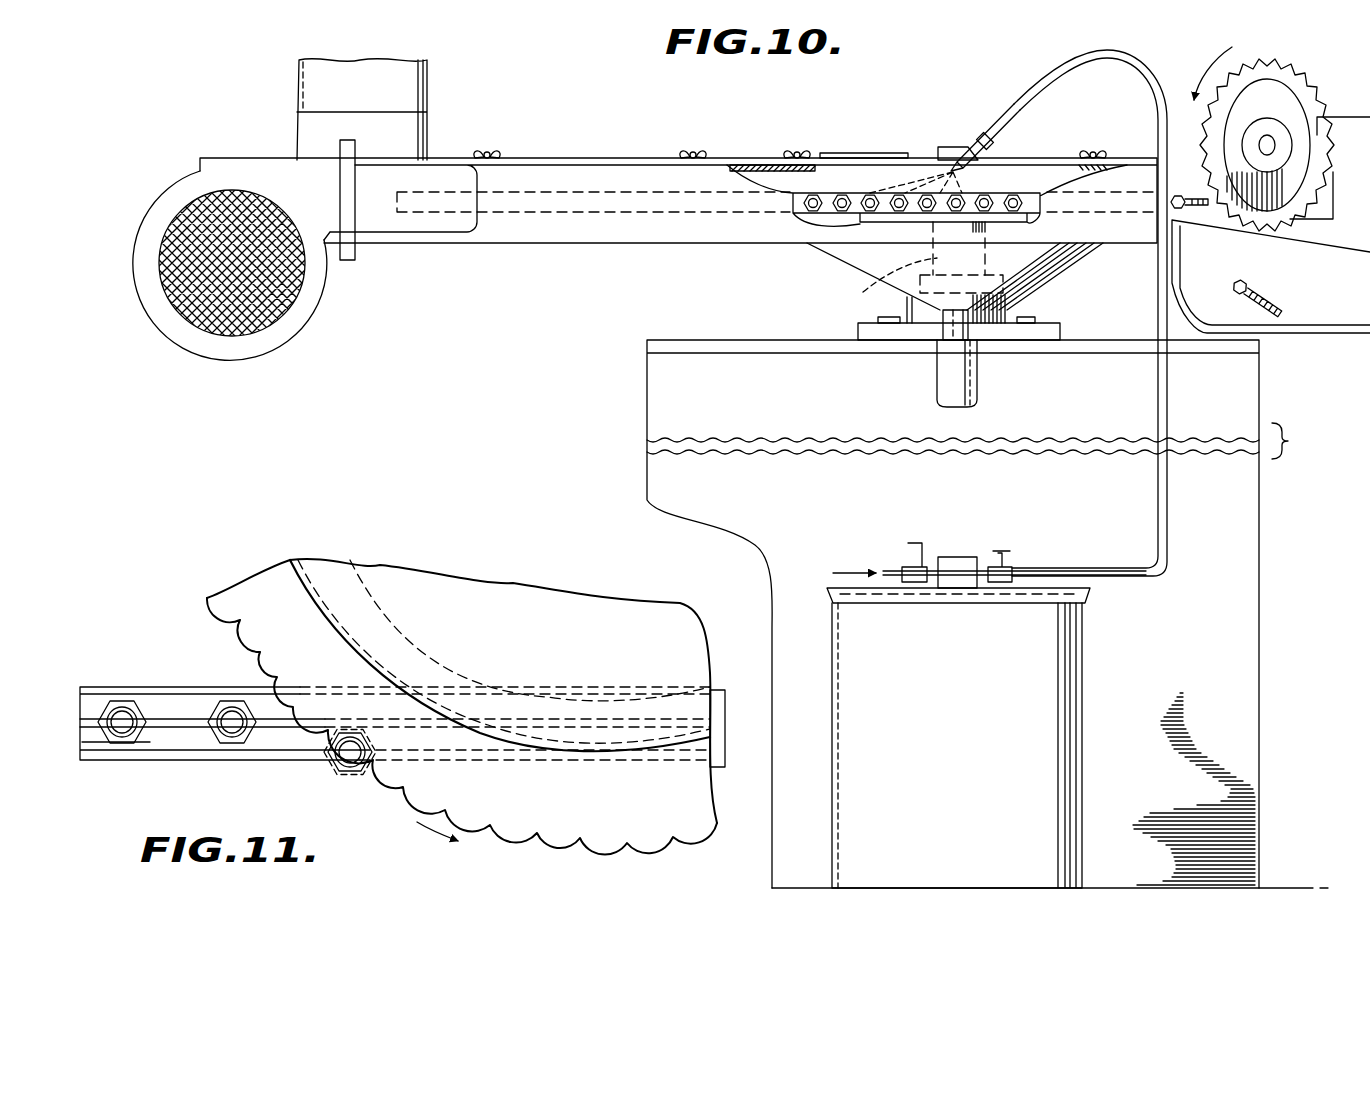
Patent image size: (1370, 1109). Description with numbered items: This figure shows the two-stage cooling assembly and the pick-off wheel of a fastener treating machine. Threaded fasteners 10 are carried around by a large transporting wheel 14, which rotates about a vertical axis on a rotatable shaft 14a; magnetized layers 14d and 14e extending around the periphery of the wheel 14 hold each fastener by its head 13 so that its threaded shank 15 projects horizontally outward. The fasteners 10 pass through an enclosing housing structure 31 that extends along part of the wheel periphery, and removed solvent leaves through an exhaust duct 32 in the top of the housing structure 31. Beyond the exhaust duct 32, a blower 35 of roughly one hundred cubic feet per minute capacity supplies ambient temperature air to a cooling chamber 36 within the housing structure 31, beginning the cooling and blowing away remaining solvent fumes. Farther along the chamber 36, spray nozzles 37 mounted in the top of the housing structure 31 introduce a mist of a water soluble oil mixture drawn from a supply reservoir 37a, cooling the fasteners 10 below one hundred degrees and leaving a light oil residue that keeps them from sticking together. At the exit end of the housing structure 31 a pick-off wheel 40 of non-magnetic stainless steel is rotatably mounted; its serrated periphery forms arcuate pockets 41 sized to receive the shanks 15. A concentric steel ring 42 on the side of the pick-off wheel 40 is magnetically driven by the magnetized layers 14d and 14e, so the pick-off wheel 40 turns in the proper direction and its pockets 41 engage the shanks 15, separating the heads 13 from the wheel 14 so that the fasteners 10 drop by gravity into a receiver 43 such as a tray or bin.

In FIG. 10, the threaded fasteners 10 is at (814, 212).
In FIG. 11, the heads 13 is at (329, 766).
In FIG. 10, the transporting wheel 14 is at (570, 206).
In FIG. 11, the transporting wheel 14 is at (123, 684).
In FIG. 10, the rotatable shaft 14a is at (955, 281).
In FIG. 11, the magnetized layer 14d is at (178, 705).
In FIG. 11, the magnetized layer 14e is at (167, 740).
In FIG. 11, the threaded shanks 15 is at (350, 757).
In FIG. 10, the housing structure 31 is at (643, 228).
In FIG. 10, the exhaust duct 32 is at (403, 74).
In FIG. 10, the blower 35 is at (289, 338).
In FIG. 10, the cooling chamber 36 is at (755, 170).
In FIG. 10, the spray nozzles 37 is at (975, 140).
In FIG. 10, the supply reservoir 37a is at (986, 715).
In FIG. 10, the pick-off wheel 40 is at (1296, 79).
In FIG. 11, the pick-off wheel 40 is at (252, 576).
In FIG. 10, the arcuate pockets 41 is at (1218, 63).
In FIG. 11, the arcuate pockets 41 is at (512, 822).
In FIG. 11, the concentric steel ring 42 is at (410, 660).
In FIG. 10, the receiver 43 is at (1008, 502).